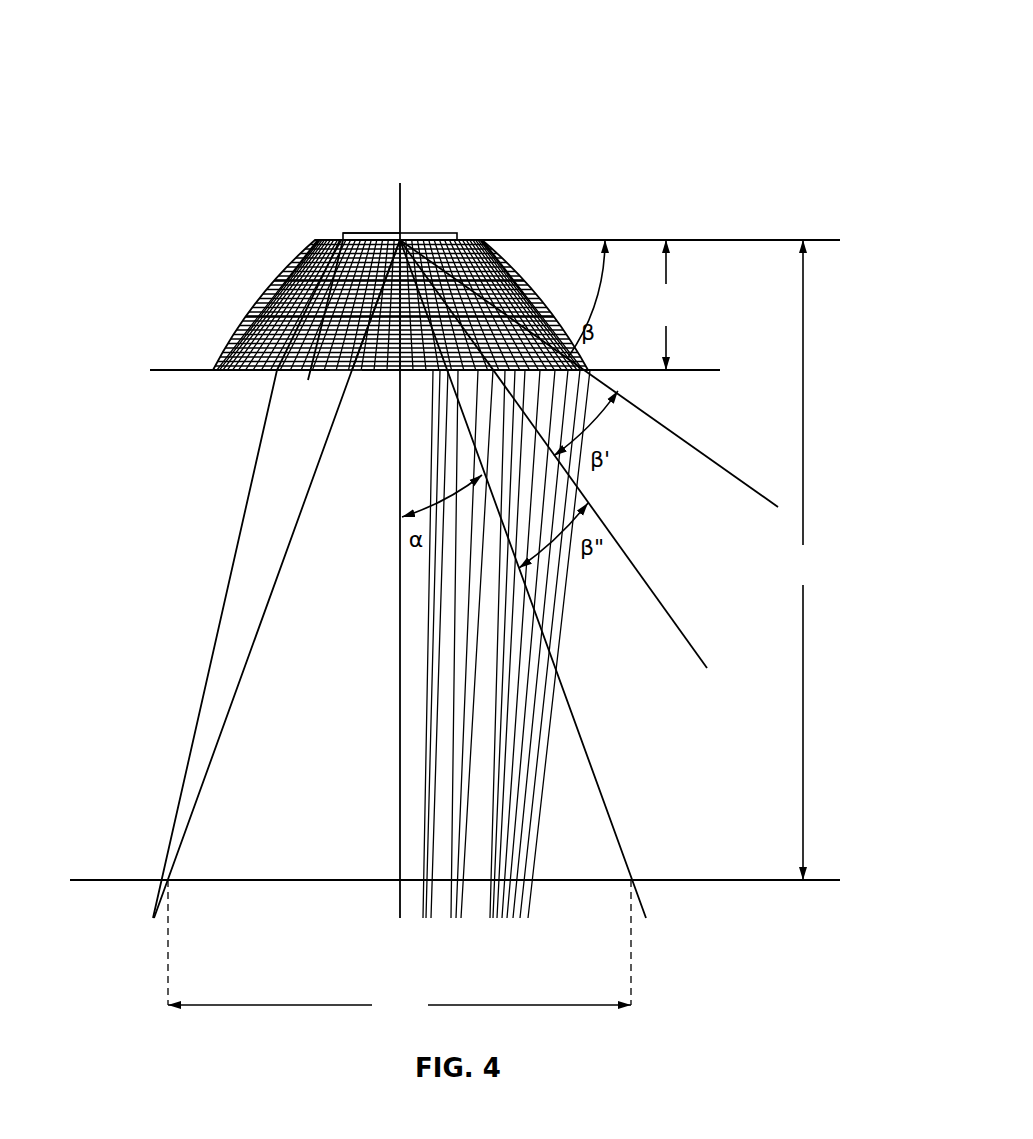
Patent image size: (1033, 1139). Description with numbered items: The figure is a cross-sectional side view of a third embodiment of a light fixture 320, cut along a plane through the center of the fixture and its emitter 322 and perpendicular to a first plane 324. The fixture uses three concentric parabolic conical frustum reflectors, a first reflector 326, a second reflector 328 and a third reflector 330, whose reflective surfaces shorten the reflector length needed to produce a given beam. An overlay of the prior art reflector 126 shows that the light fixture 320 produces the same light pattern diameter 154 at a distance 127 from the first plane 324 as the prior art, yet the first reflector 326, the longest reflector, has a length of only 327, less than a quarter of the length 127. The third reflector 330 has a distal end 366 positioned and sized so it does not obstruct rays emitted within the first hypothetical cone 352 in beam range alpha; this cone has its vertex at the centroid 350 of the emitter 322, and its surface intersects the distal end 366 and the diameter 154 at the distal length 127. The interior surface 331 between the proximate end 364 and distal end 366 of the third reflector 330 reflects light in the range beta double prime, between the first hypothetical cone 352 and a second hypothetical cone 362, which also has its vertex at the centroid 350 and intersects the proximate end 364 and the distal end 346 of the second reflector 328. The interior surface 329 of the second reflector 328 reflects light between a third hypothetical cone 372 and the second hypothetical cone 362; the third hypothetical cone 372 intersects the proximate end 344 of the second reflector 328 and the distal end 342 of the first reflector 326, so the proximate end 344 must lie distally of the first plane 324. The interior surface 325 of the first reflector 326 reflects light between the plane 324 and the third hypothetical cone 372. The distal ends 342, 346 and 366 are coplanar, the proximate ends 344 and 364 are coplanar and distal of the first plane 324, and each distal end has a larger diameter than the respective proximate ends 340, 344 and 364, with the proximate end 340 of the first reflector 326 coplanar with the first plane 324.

The light fixture 320 is at (728, 50).
The emitter 322 is at (350, 237).
The first plane 324 is at (688, 240).
The interior surface of the first reflector 325 is at (315, 243).
The first reflector 326 is at (280, 280).
The first reflector length 327 is at (666, 305).
The second reflector 328 is at (303, 360).
The interior surface of the second reflector 329 is at (310, 373).
The third reflector 330 is at (357, 337).
The interior surface of the third reflector 331 is at (368, 373).
The proximate end of the first reflector 340 is at (465, 237).
The distal end of the first reflector 342 is at (218, 375).
The proximate end of the second reflector 344 is at (481, 240).
The distal end of the second reflector 346 is at (594, 436).
The centroid 350 is at (403, 237).
The first hypothetical cone 352 is at (263, 623).
The second hypothetical cone 362 is at (645, 578).
The proximate end of the third reflector 364 is at (367, 237).
The distal end of the third reflector 366 is at (358, 373).
The third hypothetical cone 372 is at (722, 465).
The reflector 126 is at (175, 790).
The distance 127 is at (803, 560).
The light pattern diameter 154 is at (399, 949).